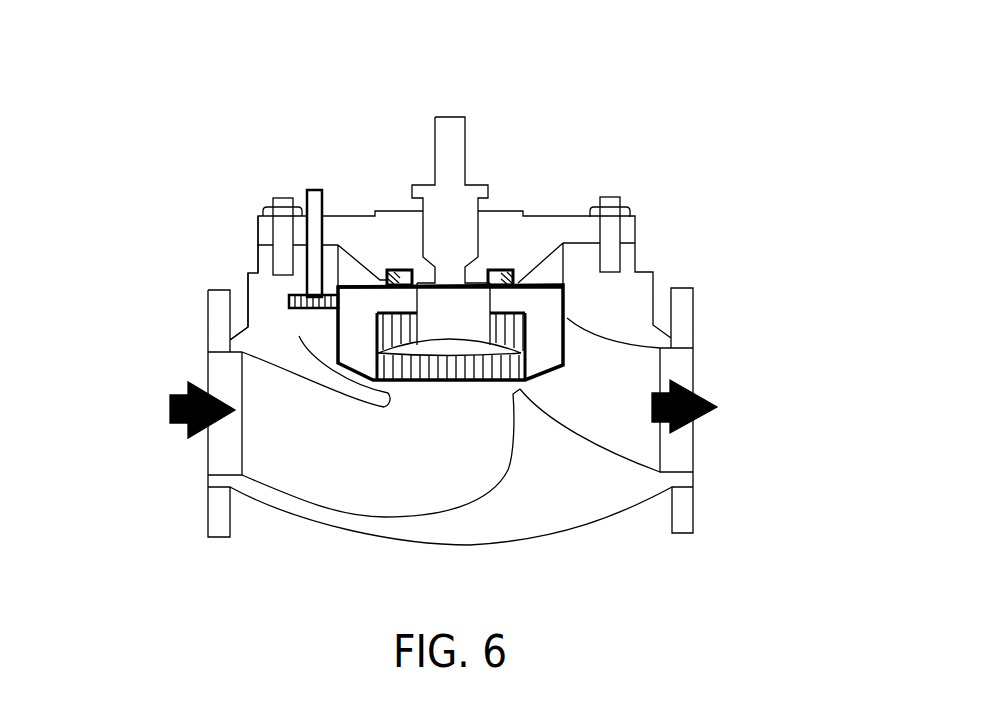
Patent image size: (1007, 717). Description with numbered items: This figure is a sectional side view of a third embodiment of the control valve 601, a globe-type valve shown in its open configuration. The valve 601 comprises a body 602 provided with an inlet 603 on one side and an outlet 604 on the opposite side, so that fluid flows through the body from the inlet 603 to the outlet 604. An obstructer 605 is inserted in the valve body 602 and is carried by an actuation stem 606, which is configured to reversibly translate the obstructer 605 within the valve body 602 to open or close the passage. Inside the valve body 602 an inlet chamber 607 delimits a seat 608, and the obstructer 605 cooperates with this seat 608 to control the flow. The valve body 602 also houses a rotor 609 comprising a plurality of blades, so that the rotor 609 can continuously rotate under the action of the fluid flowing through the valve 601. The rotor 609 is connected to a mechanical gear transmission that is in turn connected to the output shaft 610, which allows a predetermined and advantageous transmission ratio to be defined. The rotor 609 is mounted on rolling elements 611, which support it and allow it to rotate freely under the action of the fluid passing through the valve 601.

The control valve 601 is at (617, 88).
The valve body 602 is at (240, 291).
The inlet 603 is at (227, 382).
The outlet 604 is at (678, 462).
The obstructer 605 is at (487, 318).
The actuation stem 606 is at (452, 150).
The inlet chamber 607 is at (333, 432).
The seat 608 is at (525, 390).
The rotor 609 is at (448, 366).
The output shaft 610 is at (315, 215).
The rolling elements 611 is at (511, 275).